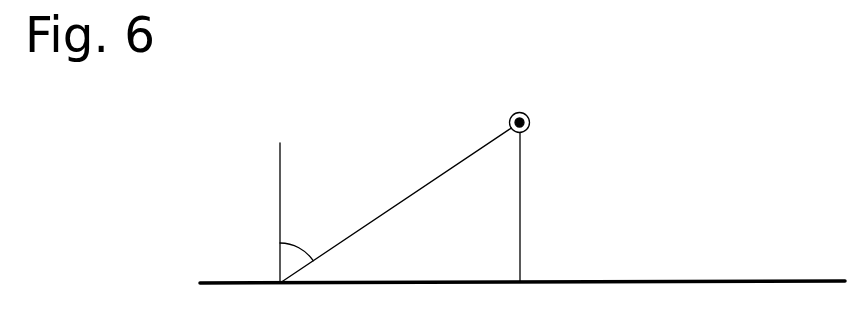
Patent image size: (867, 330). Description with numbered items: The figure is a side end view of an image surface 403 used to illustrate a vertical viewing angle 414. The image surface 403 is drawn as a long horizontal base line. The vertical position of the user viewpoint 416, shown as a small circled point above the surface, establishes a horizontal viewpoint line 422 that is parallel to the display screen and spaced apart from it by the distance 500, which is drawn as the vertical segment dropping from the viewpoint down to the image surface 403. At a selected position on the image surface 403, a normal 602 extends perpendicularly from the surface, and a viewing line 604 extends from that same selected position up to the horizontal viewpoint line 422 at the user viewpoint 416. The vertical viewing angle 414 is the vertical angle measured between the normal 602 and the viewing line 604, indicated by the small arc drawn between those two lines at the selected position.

The image surface 403 is at (200, 283).
The normal 602 is at (280, 163).
The distance 500 is at (520, 195).
The viewing line 604 is at (458, 162).
The vertical viewing angle 414 is at (293, 249).
The user viewpoint 416 is at (529, 122).
The horizontal viewpoint line 422 is at (518, 112).